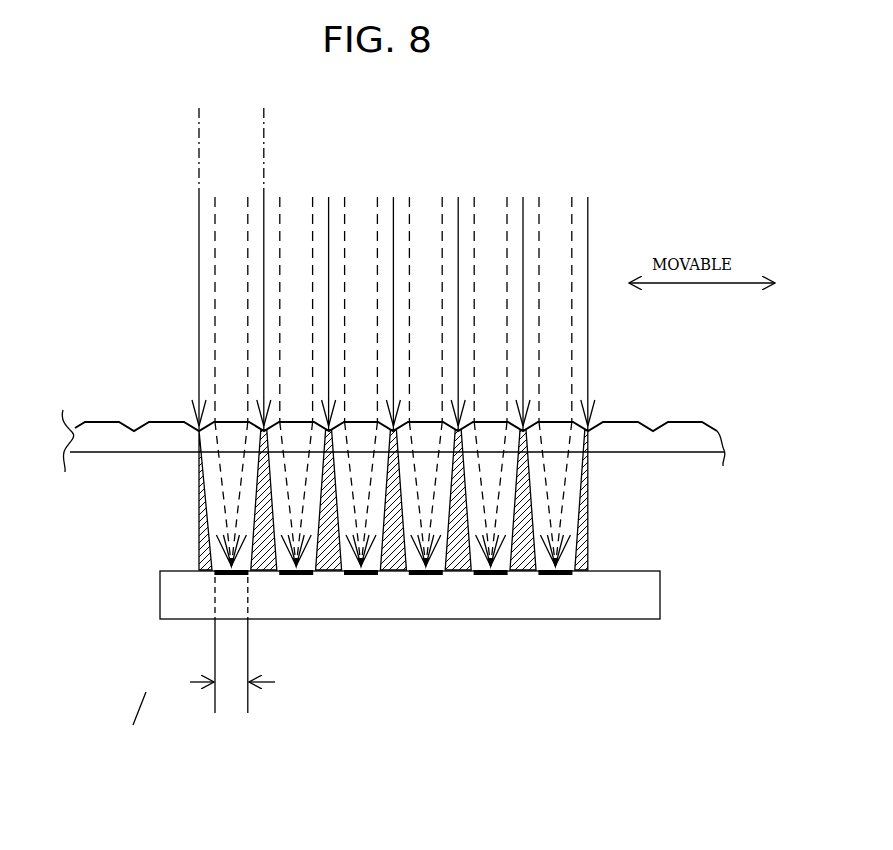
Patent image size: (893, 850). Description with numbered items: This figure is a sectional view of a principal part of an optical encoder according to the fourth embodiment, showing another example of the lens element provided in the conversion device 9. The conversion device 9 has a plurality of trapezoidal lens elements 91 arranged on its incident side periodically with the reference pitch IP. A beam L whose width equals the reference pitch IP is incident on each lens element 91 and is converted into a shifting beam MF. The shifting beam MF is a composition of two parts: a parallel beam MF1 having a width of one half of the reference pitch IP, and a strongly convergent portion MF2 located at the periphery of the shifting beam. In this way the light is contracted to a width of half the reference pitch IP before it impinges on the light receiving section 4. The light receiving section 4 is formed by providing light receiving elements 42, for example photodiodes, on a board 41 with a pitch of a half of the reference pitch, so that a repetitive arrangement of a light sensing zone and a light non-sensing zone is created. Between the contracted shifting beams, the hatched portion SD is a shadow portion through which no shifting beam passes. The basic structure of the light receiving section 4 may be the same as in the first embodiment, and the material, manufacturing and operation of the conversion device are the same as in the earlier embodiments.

The trapezoidal lens element 91 is at (232, 419).
The conversion device 9 is at (418, 422).
The board 41 is at (632, 609).
The light receiving section 4 is at (466, 625).
The light receiving element 42 is at (227, 577).
The shadow portion SD is at (457, 577).
The parallel beam MF1 is at (548, 476).
The strongly convergent portion MF2 is at (538, 508).
The shifting beam MF is at (461, 496).
The beam L is at (603, 188).
The reference pitch IP is at (307, 133).